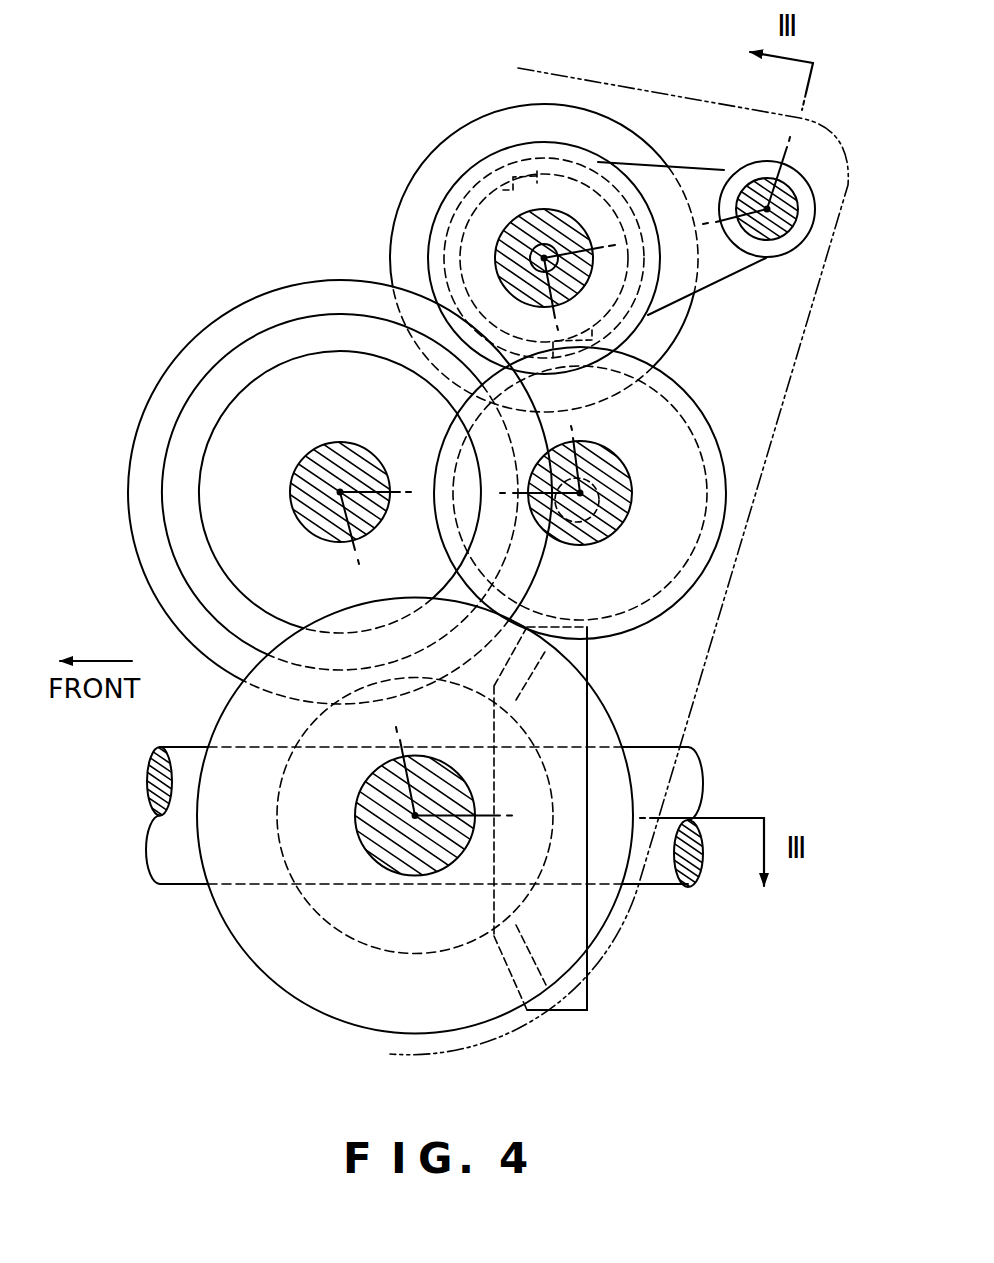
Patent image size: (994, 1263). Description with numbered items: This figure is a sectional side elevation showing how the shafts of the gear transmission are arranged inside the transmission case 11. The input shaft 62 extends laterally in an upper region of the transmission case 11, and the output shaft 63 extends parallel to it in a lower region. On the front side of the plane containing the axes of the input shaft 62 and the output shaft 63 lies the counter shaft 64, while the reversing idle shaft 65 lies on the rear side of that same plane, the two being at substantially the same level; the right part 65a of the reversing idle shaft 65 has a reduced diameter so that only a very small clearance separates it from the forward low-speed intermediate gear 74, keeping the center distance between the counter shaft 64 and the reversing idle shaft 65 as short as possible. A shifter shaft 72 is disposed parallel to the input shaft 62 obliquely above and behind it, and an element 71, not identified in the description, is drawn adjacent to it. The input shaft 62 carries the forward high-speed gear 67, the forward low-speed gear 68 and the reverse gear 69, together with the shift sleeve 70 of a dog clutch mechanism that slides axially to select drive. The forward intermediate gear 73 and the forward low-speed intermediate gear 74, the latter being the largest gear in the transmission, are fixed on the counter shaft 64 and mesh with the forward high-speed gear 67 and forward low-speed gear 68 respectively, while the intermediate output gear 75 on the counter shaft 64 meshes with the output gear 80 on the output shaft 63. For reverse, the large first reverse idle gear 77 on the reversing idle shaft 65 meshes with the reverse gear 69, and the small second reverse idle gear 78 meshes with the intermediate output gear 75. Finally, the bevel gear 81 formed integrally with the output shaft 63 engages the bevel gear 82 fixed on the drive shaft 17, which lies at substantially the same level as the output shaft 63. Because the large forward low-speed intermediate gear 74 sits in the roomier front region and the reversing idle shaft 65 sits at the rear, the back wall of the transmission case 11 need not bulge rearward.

The transmission case 11 is at (671, 97).
The drive shaft 17 is at (669, 889).
The input shaft 62 is at (366, 212).
The output shaft 63 is at (378, 910).
The counter shaft 64 is at (324, 485).
The reversing idle shaft 65 is at (588, 493).
The right part of the reverse idle shaft 65a is at (577, 522).
The forward high-speed gear 67 is at (460, 130).
The forward low-speed gear 68 is at (498, 109).
The reverse gear 69 is at (450, 190).
The shift sleeve 70 is at (480, 177).
The support arm 71 is at (705, 173).
The shifter shaft 72 is at (768, 232).
The forward intermediate gear 73 is at (219, 360).
The forward low-speed intermediate gear 74 is at (232, 304).
The intermediate output gear 75 is at (322, 352).
The first reverse idle gear 77 is at (712, 418).
The second reverse idle gear 78 is at (651, 600).
The output gear 80 is at (227, 936).
The bevel gear 81 is at (337, 932).
The bevel gear 82 is at (587, 1003).